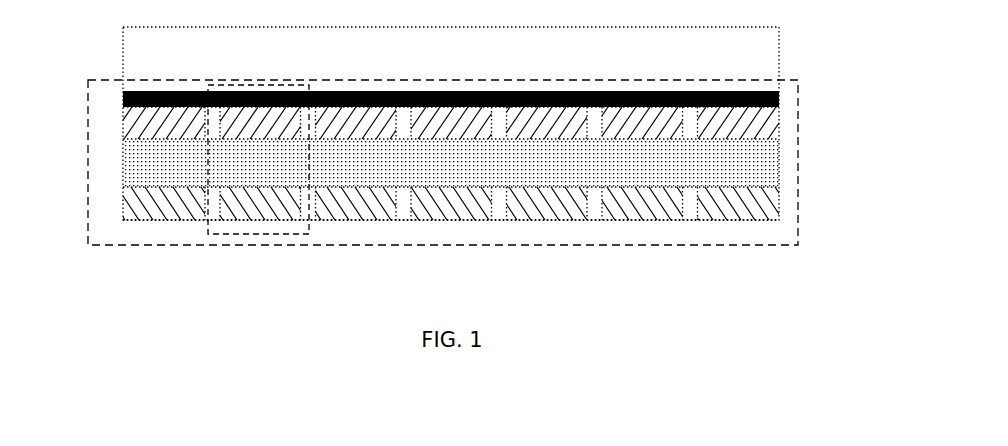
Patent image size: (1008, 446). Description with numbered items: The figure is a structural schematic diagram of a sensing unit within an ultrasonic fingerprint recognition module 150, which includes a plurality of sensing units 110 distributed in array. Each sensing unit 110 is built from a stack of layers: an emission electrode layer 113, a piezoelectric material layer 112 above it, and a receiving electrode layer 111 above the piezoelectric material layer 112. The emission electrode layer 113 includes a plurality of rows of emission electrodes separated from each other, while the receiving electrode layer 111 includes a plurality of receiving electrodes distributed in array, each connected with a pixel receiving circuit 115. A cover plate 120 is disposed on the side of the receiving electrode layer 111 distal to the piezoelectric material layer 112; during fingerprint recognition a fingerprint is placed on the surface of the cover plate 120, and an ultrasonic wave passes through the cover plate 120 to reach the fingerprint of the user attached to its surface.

The sensing unit 110 is at (263, 234).
The receiving electrode layer 111 is at (770, 126).
The piezoelectric material layer 112 is at (763, 165).
The emission electrode layer 113 is at (762, 203).
The pixel receiving circuit 115 is at (747, 90).
The cover plate 120 is at (762, 48).
The ultrasonic fingerprint recognition module 150 is at (88, 183).